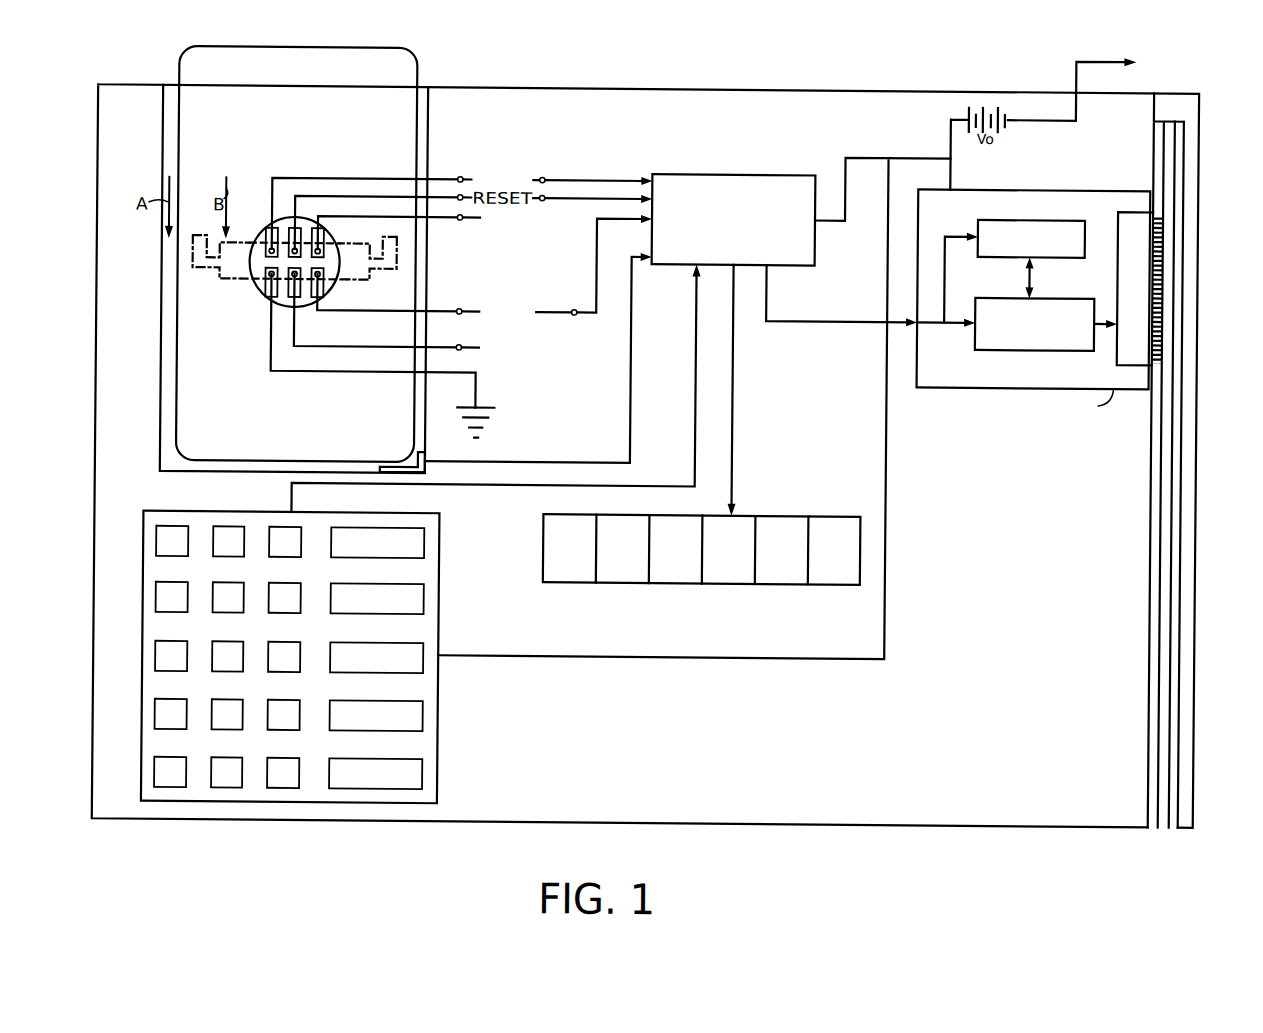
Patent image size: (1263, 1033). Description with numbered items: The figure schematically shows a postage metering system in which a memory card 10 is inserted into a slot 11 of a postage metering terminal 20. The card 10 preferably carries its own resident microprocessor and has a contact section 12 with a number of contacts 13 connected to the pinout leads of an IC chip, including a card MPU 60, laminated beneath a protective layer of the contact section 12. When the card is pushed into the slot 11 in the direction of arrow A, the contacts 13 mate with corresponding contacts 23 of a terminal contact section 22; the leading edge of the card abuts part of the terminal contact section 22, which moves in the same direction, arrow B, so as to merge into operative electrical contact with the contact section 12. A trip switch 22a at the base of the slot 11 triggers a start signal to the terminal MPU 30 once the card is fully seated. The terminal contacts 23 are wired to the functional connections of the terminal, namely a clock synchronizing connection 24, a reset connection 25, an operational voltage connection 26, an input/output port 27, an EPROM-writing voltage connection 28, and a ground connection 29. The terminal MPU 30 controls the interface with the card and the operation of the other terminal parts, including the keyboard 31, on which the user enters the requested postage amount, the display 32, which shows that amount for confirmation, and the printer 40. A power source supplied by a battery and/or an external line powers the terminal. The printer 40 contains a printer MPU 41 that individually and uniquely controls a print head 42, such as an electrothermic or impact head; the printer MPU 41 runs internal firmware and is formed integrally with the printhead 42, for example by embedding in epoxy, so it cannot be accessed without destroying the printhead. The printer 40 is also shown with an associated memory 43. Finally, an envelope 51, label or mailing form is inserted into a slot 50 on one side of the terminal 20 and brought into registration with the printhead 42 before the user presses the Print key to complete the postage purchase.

The memory card 10 is at (403, 54).
The slot 11 is at (423, 98).
The contact section 12 is at (326, 285).
The contacts 13 is at (304, 276).
The card MPU 60 is at (276, 270).
The postage metering terminal 20 is at (897, 91).
The terminal contact section 22 is at (226, 276).
The trip switch 22a is at (387, 466).
The terminal contacts 23 is at (269, 251).
The Clock synchronizing connection 24 is at (455, 181).
The Reset connection 25 is at (385, 199).
The operational voltage Vcc connection 26 is at (447, 222).
The Input/Output port 27 is at (449, 313).
The EPROM-writing voltage Vpp connection 28 is at (449, 349).
The ground connection 29 is at (434, 376).
The terminal MPU 30 is at (803, 174).
The keyboard 31 is at (442, 697).
The display 32 is at (617, 584).
The printer 40 is at (1036, 312).
The printer MPU 41 is at (996, 346).
The print head 42 is at (1115, 272).
The printer memory 43 is at (975, 218).
The slot 50 is at (1170, 826).
The envelope 51 is at (1197, 483).